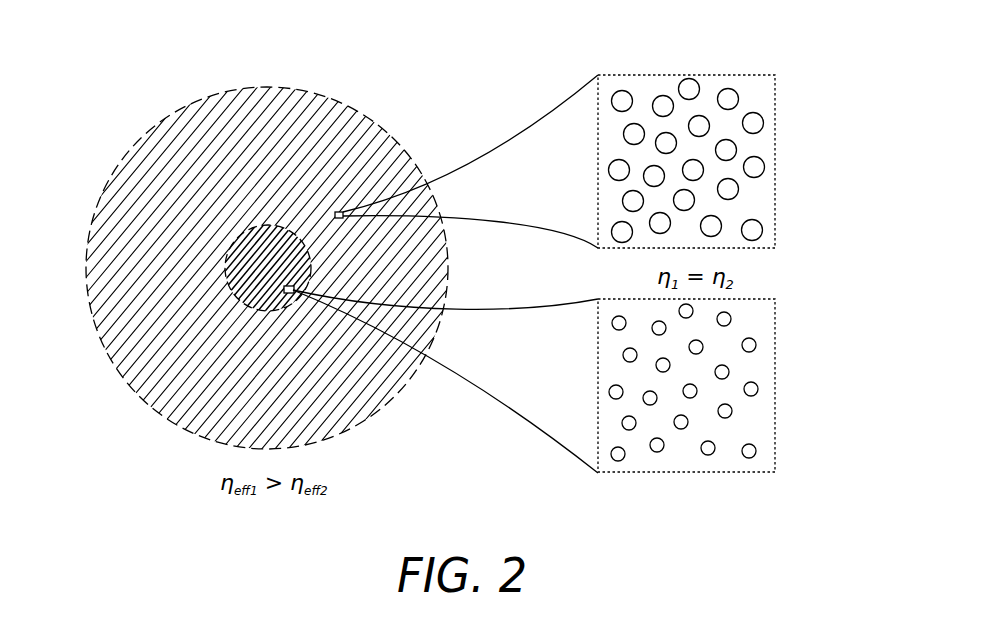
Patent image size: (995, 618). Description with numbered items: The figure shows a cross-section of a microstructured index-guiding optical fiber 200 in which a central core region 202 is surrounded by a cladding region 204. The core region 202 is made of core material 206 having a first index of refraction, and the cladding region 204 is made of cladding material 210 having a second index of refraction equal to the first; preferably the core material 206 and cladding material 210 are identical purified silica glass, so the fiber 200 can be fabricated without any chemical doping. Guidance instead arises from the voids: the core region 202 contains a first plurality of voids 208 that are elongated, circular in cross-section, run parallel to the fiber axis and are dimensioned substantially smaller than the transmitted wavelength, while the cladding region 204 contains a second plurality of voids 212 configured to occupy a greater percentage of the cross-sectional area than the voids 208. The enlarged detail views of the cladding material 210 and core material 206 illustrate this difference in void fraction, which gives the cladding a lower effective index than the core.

The microstructured index-guiding optical fiber 200 is at (138, 136).
The core region 202 is at (228, 267).
The cladding region 204 is at (182, 393).
The core material 206 is at (762, 325).
The first plurality of voids 208 is at (752, 378).
The cladding material 210 is at (752, 82).
The second plurality of voids 212 is at (752, 112).